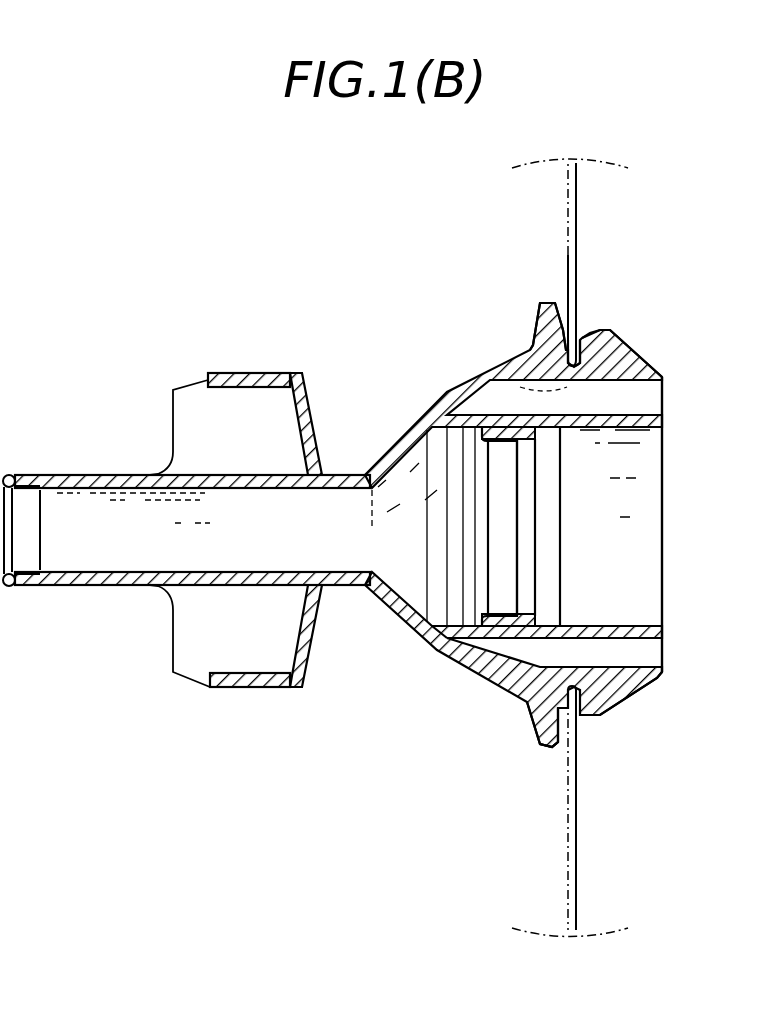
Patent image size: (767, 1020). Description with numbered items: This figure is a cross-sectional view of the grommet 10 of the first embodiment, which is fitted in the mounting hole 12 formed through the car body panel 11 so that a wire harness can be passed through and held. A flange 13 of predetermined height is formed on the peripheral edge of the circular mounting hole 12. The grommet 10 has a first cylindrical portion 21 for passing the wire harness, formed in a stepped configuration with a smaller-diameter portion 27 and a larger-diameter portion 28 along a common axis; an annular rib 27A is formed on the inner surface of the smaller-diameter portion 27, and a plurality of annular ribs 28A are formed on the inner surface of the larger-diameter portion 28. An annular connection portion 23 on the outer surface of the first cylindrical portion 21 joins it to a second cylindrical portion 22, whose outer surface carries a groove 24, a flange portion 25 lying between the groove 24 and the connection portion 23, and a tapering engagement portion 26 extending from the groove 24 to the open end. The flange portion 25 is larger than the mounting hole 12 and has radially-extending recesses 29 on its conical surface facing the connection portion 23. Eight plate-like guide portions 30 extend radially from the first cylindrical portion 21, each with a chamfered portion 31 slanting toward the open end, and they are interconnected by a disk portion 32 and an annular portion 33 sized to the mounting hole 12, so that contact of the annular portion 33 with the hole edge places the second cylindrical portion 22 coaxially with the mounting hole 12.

The grommet 10 is at (551, 548).
The car body panel 11 is at (568, 215).
The mounting hole 12 is at (513, 380).
The flange 13 is at (580, 337).
The first cylindrical portion 21 is at (72, 586).
The second cylindrical portion 22 is at (500, 690).
The connection portion 23 is at (445, 650).
The groove 24 is at (587, 711).
The flange portion 25 is at (553, 745).
The engagement portion 26 is at (640, 357).
The smaller-diameter portion 27 is at (100, 476).
The annular rib 27A is at (33, 520).
The larger-diameter portion 28 is at (645, 413).
The annular ribs 28A is at (458, 552).
The radially-extending recesses 29 is at (540, 327).
The guide portions 30 is at (232, 398).
The chamfered portions 31 is at (175, 387).
The disk portion 32 is at (307, 420).
The annular portion 33 is at (267, 377).